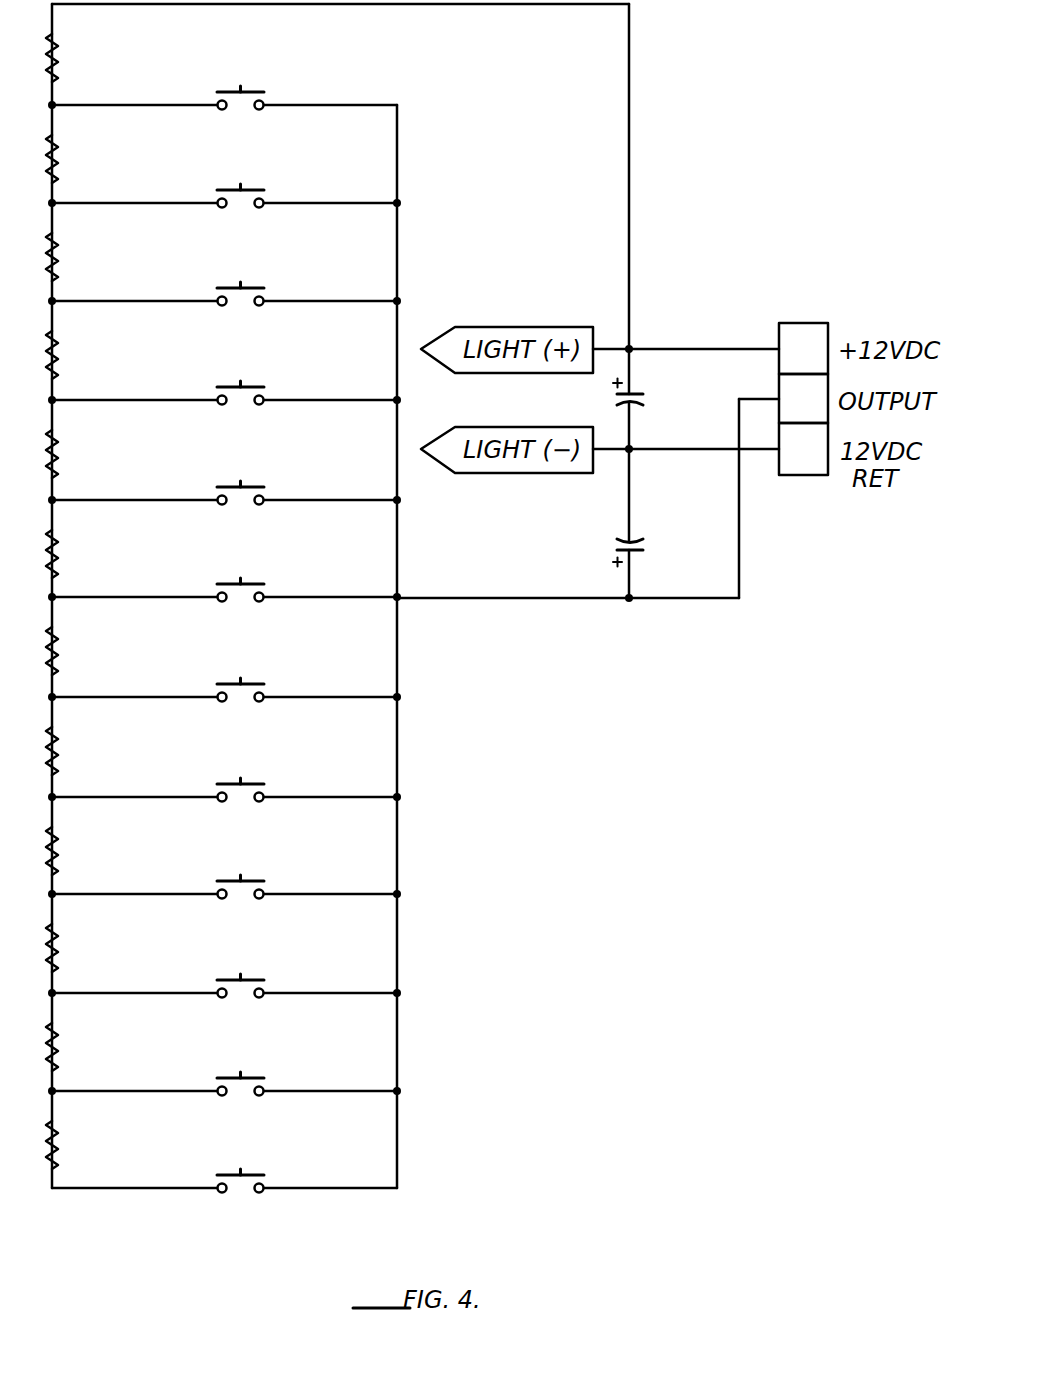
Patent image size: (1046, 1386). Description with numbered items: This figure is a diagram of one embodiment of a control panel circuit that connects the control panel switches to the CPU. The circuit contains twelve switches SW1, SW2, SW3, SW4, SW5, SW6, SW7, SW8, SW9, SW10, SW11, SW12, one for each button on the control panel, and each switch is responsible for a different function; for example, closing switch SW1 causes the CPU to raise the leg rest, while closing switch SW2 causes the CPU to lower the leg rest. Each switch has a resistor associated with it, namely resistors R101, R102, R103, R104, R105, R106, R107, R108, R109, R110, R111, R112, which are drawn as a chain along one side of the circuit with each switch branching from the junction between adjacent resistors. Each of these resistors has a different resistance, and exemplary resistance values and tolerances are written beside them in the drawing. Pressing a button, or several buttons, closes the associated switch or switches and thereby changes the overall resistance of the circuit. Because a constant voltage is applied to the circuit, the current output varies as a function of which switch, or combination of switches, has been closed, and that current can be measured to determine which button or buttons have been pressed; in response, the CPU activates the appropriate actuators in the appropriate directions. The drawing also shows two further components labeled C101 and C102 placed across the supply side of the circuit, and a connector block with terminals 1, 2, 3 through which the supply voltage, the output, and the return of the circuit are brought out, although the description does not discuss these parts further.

The resistor R101 is at (93, 55).
The resistor R102 is at (88, 156).
The resistor R103 is at (88, 254).
The resistor R104 is at (88, 352).
The resistor R105 is at (88, 451).
The resistor R106 is at (88, 551).
The resistor R107 is at (88, 648).
The resistor R108 is at (88, 748).
The resistor R109 is at (93, 848).
The resistor R110 is at (93, 945).
The resistor R111 is at (93, 1044).
The resistor R112 is at (93, 1142).
The switch SW1 is at (224, 84).
The switch SW2 is at (224, 182).
The switch SW3 is at (224, 280).
The switch SW4 is at (224, 379).
The switch SW5 is at (224, 479).
The switch SW6 is at (224, 576).
The switch SW7 is at (224, 676).
The switch SW8 is at (224, 776).
The switch SW9 is at (224, 873).
The switch SW10 is at (224, 972).
The switch SW11 is at (224, 1070).
The switch SW12 is at (224, 1167).
The capacitor 10uF 16V C101 is at (664, 398).
The capacitor 10uF 16V C102 is at (664, 548).
The terminal +12VDC 1 is at (803, 348).
The terminal OUTPUT 2 is at (803, 398).
The terminal 12VDC RET 3 is at (803, 449).